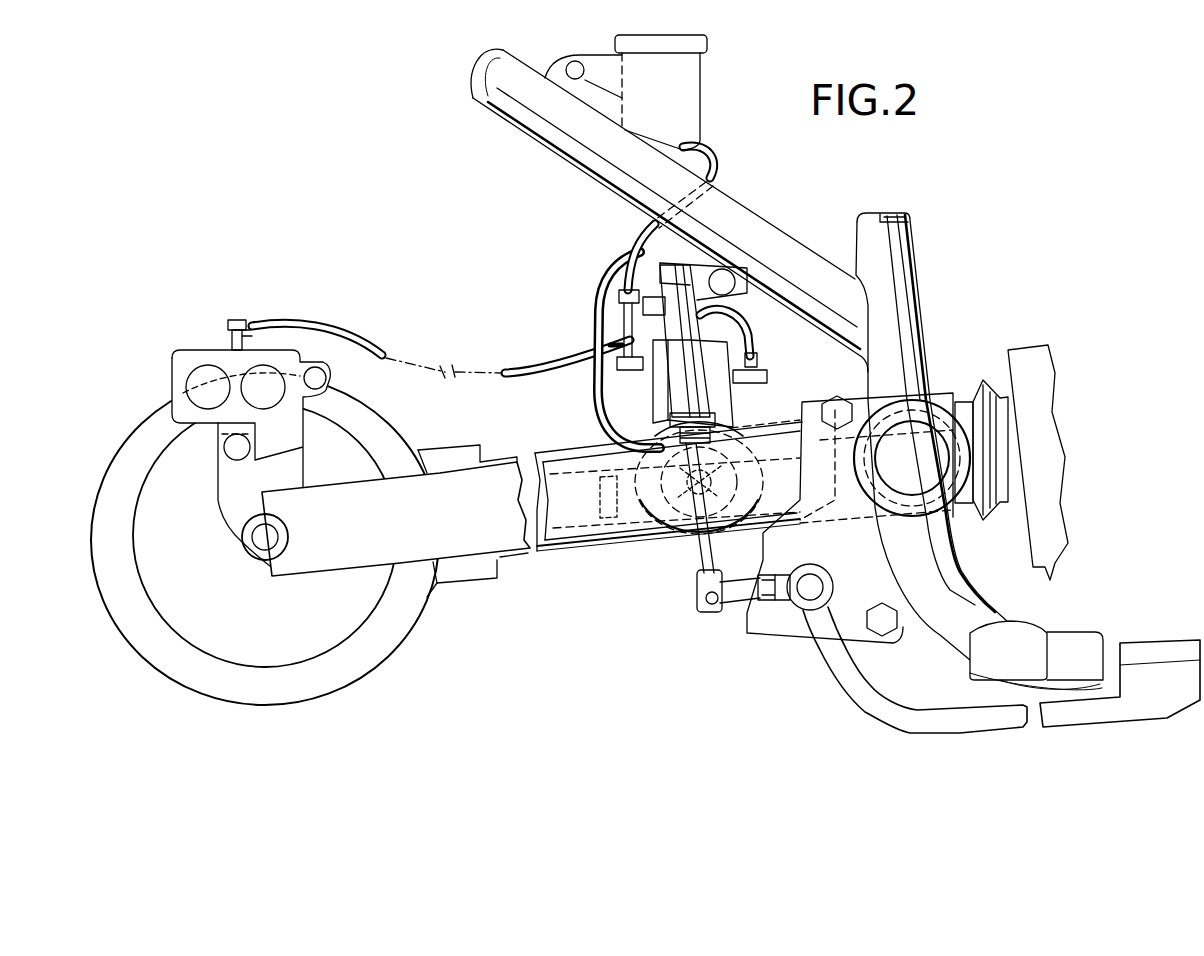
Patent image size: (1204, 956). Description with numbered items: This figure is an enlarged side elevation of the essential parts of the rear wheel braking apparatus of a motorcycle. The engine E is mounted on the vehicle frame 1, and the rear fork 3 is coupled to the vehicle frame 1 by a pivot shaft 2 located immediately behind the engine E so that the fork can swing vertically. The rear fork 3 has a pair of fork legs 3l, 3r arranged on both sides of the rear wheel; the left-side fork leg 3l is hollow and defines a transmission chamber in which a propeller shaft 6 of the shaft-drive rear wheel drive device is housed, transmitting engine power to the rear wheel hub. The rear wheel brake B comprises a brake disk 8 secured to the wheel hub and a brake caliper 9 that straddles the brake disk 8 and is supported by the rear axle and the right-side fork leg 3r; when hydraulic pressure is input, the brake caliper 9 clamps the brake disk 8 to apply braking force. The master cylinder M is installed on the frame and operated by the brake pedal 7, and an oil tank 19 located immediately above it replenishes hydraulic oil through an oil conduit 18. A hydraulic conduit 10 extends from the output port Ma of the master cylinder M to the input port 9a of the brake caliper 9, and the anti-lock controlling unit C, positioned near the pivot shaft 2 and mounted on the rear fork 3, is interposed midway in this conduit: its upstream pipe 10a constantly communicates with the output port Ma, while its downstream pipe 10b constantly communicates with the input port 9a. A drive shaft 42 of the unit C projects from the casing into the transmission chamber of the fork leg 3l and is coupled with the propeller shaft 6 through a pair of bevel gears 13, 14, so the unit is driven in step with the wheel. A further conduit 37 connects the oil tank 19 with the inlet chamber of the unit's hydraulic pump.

The vehicle frame 1 is at (920, 294).
The pivot shaft 2 is at (920, 473).
The rear fork 3 is at (597, 517).
The right-side fork leg 3r is at (502, 461).
The left-side fork leg 3l is at (572, 457).
The propeller shaft 6 is at (770, 471).
The brake pedal 7 is at (1083, 720).
The brake disk 8 is at (393, 429).
The brake caliper 9 is at (173, 385).
The input port 9a is at (232, 334).
The hydraulic conduit 10 is at (533, 368).
The upstream pipe 10a is at (616, 319).
The downstream pipe 10b is at (326, 335).
The bevel gear 13 is at (662, 540).
The bevel gear 14 is at (714, 478).
The oil conduit 18 is at (718, 168).
The oil tank 19 is at (700, 85).
The conduit 37 is at (621, 276).
The drive shaft 42 is at (702, 482).
The rear wheel brake B is at (234, 434).
The anti-lock controlling unit C is at (660, 379).
The engine E is at (1037, 345).
The master cylinder M is at (720, 403).
The output port Ma is at (712, 310).